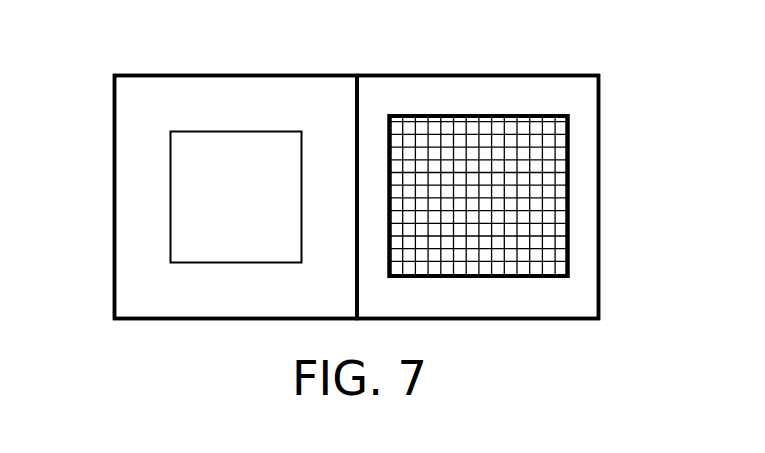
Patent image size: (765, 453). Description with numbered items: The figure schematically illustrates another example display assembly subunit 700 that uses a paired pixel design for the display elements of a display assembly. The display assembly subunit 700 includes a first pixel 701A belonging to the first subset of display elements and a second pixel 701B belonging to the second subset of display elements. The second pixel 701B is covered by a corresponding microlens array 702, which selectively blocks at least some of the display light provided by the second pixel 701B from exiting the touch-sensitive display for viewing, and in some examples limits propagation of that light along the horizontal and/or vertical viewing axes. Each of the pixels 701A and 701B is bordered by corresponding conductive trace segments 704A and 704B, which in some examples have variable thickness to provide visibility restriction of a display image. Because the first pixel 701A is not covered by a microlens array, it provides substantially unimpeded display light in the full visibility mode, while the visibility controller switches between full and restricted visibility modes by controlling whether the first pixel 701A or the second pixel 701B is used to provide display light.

The display assembly subunit 700 is at (121, 46).
The first pixel 701A is at (210, 130).
The second pixel 701B is at (455, 104).
The microlens array 702 is at (507, 115).
The conductive trace segment 704A is at (112, 188).
The conductive trace segment 704B is at (648, 167).